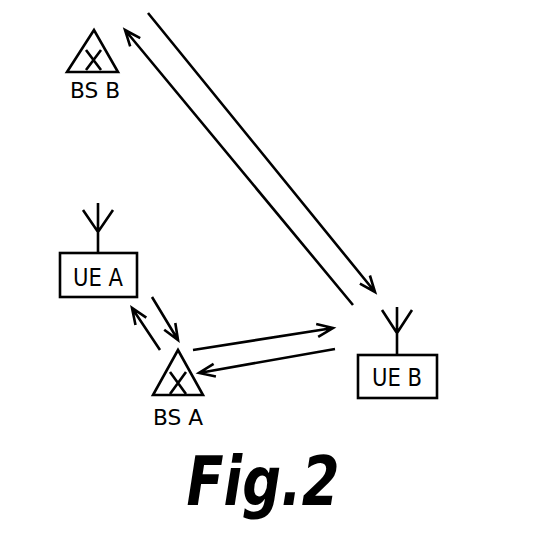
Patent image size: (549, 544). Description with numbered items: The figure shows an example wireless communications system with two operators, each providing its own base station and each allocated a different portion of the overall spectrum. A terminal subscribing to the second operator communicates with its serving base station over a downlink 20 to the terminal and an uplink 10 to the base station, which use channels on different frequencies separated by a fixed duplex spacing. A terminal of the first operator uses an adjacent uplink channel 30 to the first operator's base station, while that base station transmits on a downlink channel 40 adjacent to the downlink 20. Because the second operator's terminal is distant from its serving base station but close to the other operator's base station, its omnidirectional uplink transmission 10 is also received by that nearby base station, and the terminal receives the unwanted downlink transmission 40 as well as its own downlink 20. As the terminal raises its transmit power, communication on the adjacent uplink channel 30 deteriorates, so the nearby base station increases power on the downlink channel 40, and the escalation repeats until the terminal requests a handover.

The uplink 10 is at (242, 172).
The downlink 20 is at (270, 160).
The uplink channel 30 is at (163, 315).
The downlink channel 40 is at (147, 333).